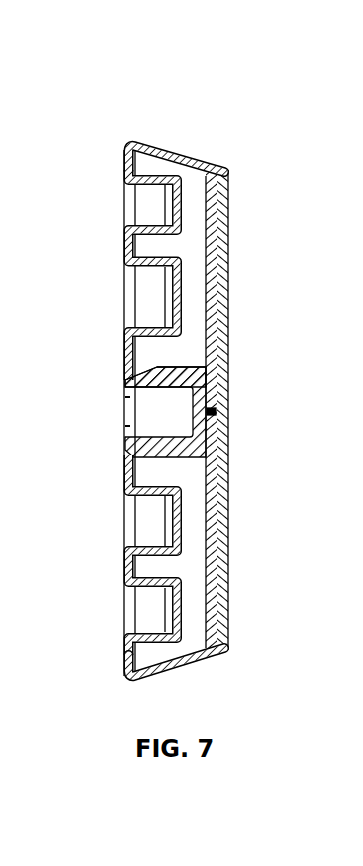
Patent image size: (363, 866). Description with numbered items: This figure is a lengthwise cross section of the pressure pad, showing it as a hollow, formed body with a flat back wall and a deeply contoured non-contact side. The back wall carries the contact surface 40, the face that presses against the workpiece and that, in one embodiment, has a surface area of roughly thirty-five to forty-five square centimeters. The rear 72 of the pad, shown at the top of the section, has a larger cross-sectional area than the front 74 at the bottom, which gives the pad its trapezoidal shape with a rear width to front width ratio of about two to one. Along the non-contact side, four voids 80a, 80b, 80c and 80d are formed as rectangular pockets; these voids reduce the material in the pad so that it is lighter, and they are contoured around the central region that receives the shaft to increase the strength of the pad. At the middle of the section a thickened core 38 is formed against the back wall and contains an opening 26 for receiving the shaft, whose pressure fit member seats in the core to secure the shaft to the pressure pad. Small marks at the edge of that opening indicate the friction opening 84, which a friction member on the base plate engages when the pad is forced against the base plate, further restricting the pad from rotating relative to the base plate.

The rear 72 is at (185, 42).
The front 74 is at (197, 686).
The void 80a is at (142, 608).
The void 80b is at (142, 518).
The void 80c is at (138, 297).
The void 80d is at (140, 202).
The base plate opening 26 is at (123, 406).
The friction opening 84 is at (125, 445).
The contact surface 40 is at (227, 378).
The core 38 is at (227, 441).